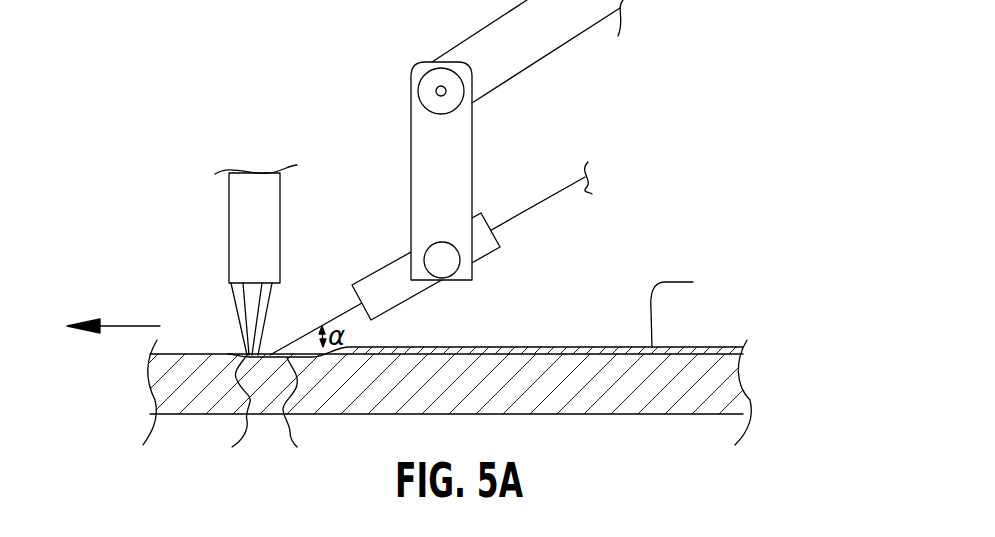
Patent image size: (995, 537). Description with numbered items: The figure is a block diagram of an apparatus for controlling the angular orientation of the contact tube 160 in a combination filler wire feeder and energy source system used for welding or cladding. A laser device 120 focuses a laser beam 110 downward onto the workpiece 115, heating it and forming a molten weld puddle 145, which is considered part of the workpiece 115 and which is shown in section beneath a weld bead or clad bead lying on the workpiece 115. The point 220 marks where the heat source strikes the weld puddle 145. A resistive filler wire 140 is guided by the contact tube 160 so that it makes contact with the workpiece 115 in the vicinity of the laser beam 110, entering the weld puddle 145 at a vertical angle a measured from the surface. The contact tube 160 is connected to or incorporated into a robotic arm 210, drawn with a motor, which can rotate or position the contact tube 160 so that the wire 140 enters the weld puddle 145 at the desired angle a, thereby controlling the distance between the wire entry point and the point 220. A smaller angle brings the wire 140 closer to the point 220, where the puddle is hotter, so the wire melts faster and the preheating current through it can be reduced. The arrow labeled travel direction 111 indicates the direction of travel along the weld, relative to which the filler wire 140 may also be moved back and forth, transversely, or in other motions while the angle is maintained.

The laser beam 110 is at (240, 320).
The travel direction 111 is at (122, 326).
The workpiece 115 is at (620, 390).
The laser device 120 is at (230, 230).
The resistive filler wire 140 is at (542, 201).
The weld puddle 145 is at (305, 415).
The contact tube 160 is at (487, 254).
The robotic arm 210 is at (473, 147).
The point where the heat source hits the weld puddle 220 is at (221, 414).